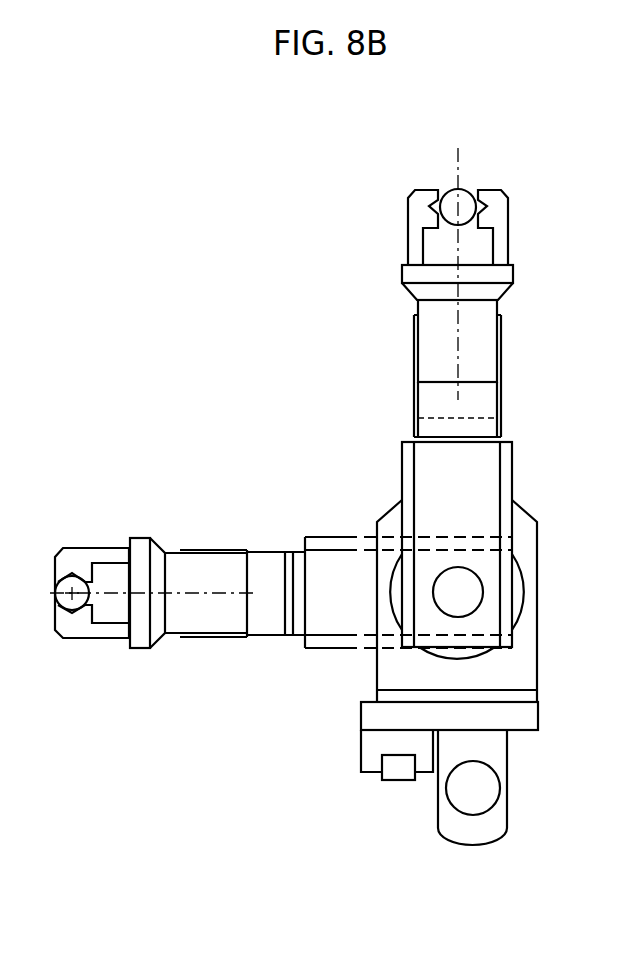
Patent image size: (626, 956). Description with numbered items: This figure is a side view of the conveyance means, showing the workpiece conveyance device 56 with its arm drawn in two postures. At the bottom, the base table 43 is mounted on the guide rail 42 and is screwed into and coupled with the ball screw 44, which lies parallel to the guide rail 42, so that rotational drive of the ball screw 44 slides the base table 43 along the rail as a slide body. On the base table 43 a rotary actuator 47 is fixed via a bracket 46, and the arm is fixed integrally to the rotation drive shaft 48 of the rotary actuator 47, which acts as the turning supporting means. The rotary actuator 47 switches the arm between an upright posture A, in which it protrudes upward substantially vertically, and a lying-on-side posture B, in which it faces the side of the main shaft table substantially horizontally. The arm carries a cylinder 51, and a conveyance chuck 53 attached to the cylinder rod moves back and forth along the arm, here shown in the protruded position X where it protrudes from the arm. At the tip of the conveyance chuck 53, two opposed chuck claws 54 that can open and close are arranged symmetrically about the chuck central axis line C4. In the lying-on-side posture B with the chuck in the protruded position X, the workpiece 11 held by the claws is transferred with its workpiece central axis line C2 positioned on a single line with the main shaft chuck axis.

The workpiece 11 is at (56, 585).
The guide rail 42 is at (397, 774).
The base table 43 is at (516, 719).
The ball screw 44 is at (476, 798).
The bracket 46 is at (513, 672).
The rotary actuator 47 is at (516, 594).
The rotation drive shaft 48 is at (443, 592).
The cylinder 51 is at (408, 490).
The conveyance chuck 53 is at (478, 353).
The chuck claws 54 is at (416, 212).
The conveyance device 56 is at (330, 708).
The upright posture A is at (321, 435).
The lying-on-side posture B is at (259, 633).
The workpiece central axis line C2 is at (57, 609).
The chuck central axis line C4 is at (449, 168).
The protruded position X is at (10, 191).